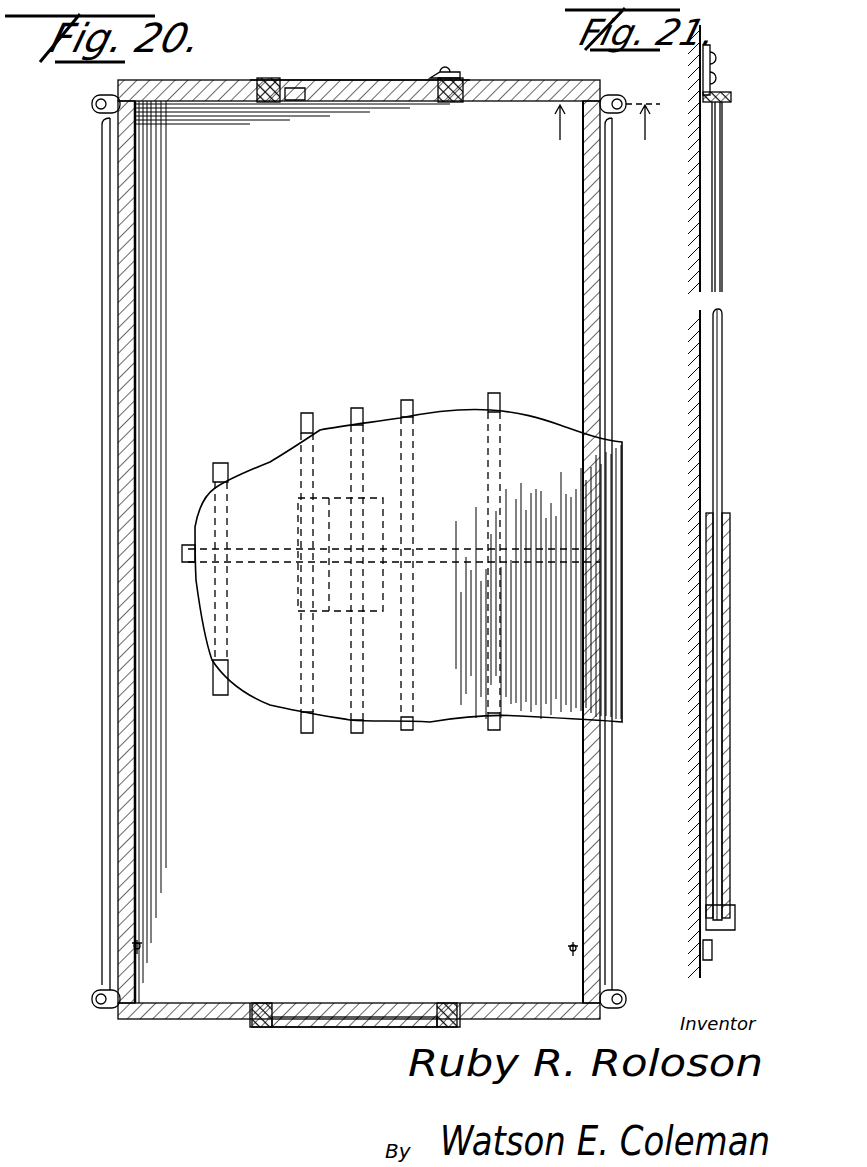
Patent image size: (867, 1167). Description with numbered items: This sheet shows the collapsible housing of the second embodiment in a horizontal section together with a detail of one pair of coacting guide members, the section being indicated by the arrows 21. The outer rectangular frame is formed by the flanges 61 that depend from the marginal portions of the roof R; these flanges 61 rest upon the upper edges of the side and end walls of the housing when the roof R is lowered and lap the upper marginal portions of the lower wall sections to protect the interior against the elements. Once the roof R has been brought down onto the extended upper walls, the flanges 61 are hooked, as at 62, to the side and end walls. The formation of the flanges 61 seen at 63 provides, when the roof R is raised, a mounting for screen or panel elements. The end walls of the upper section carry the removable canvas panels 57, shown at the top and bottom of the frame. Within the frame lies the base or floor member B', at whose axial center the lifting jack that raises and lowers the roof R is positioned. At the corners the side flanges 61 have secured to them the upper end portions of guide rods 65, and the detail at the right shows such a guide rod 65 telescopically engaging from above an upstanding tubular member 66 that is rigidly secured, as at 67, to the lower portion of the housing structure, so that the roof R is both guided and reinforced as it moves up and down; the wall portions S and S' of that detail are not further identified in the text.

In FIG. 20, the section line of FIG. 21 is at (602, 137).
In FIG. 20, the removable canvas panel 57 is at (236, 80).
In FIG. 20, the flange 61 is at (592, 325).
In FIG. 21, the flange 61 is at (704, 32).
In FIG. 20, the hook 62 is at (142, 947).
In FIG. 20, the flange formation 63 is at (108, 432).
In FIG. 20, the guide rod 65 is at (92, 105).
In FIG. 21, the guide rod 65 is at (724, 250).
In FIG. 21, the upstanding tubular member 66 is at (731, 572).
In FIG. 21, the securing point 67 is at (736, 915).
In FIG. 20, the base or floor member B' is at (293, 552).
In FIG. 20, the roof R is at (585, 640).
In FIG. 21, the wall S is at (675, 501).
In FIG. 21, the bar S' is at (732, 614).